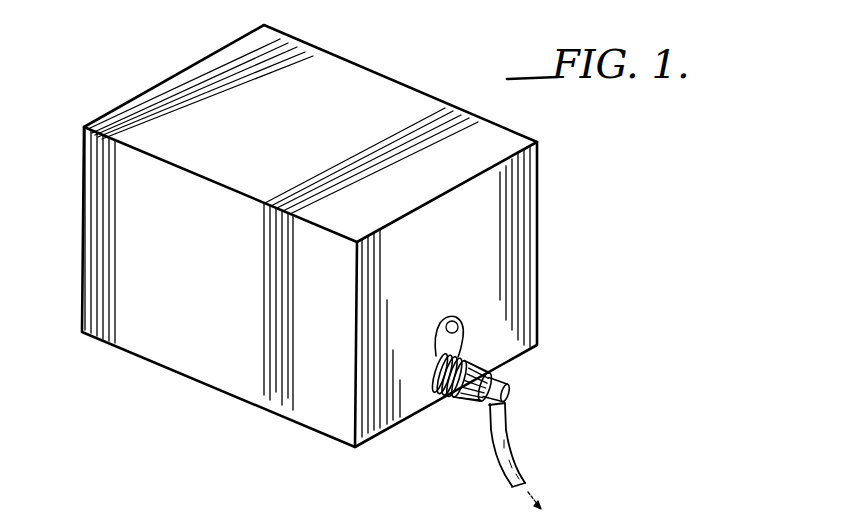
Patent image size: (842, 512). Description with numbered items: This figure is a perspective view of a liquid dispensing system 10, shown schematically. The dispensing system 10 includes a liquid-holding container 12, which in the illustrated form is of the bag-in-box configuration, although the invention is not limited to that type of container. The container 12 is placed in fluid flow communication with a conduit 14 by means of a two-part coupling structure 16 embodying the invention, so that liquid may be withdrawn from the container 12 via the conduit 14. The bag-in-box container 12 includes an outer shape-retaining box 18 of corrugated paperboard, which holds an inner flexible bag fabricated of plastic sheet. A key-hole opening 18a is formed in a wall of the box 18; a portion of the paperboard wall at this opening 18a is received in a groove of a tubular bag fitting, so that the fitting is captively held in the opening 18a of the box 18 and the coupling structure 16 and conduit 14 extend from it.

The liquid dispensing system 10 is at (580, 171).
The liquid-holding container 12 is at (113, 218).
The conduit 14 is at (507, 459).
The two-part coupling structure 16 is at (504, 371).
The outer shape-retaining box 18 is at (183, 353).
The key-hole opening 18a is at (459, 321).